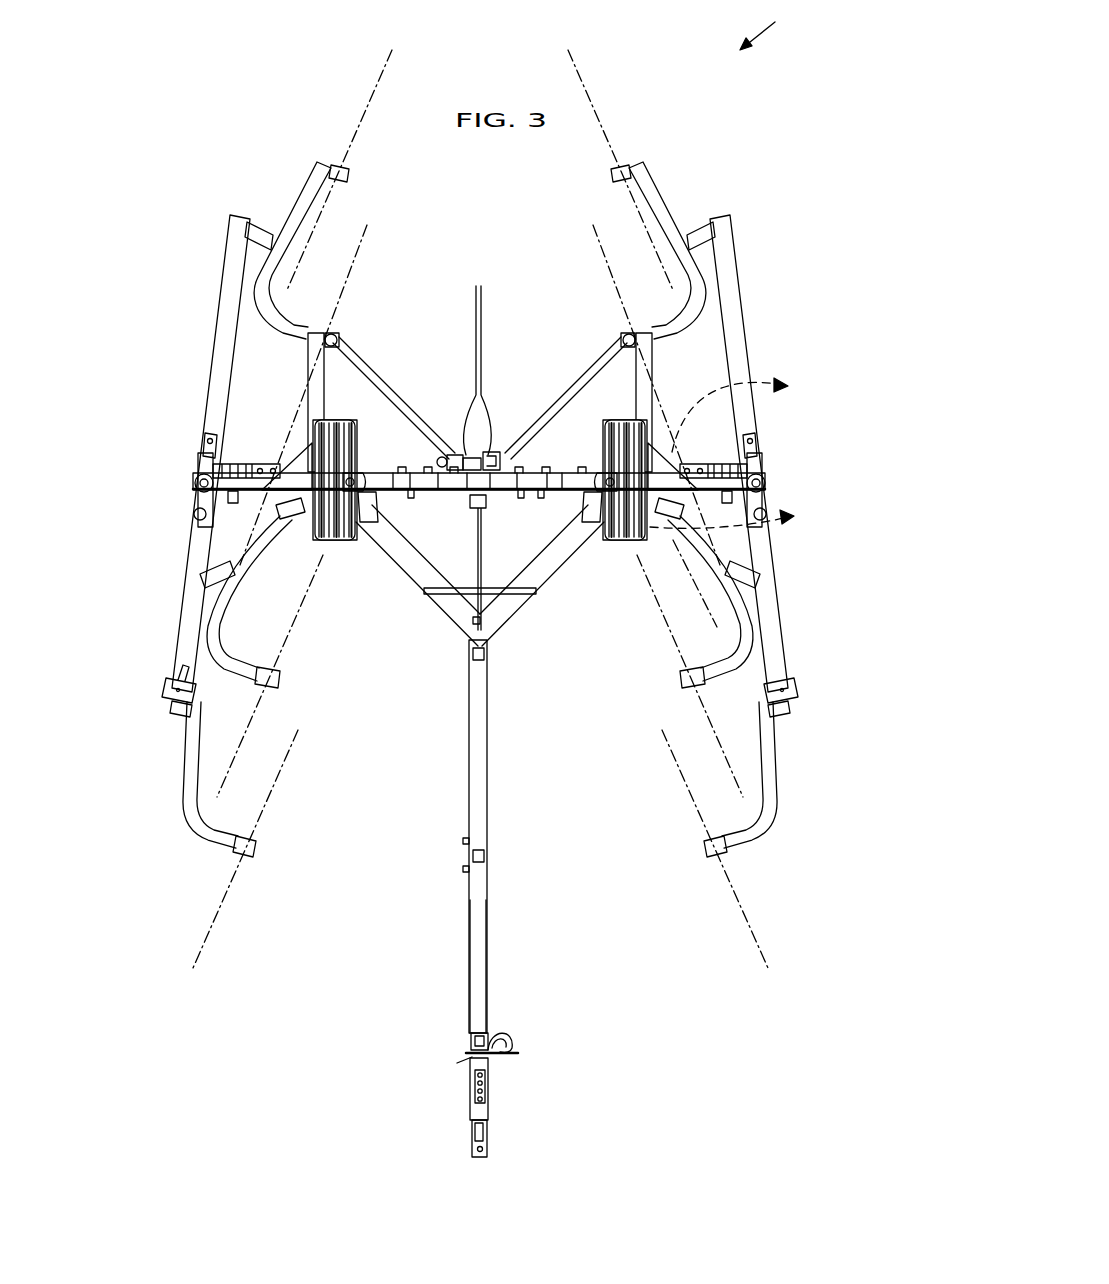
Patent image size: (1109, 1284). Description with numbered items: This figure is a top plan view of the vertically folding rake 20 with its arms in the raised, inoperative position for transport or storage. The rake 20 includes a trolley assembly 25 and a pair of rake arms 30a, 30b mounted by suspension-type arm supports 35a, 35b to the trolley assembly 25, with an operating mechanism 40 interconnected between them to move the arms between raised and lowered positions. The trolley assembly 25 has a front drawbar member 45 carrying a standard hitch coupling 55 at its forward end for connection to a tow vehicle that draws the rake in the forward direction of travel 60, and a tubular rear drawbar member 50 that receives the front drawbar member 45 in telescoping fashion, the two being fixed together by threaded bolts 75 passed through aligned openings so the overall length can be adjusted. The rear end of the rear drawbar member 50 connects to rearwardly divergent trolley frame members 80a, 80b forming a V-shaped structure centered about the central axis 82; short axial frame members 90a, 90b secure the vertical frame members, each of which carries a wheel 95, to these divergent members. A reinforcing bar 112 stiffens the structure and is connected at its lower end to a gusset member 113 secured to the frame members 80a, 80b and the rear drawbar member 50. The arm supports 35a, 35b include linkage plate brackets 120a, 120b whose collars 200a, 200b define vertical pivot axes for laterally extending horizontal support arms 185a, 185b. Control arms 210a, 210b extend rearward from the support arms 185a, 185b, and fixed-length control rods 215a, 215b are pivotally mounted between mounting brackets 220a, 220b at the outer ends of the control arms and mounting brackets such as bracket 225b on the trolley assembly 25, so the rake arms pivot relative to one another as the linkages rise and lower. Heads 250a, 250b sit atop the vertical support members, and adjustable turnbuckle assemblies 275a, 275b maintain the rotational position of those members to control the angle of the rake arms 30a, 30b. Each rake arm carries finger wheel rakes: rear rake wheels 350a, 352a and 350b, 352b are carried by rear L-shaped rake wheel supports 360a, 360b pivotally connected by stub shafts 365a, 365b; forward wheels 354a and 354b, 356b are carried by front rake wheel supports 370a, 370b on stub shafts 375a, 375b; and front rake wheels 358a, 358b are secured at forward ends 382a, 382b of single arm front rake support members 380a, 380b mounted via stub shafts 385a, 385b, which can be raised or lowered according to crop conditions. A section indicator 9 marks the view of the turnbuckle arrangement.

The vertically folding rake 20 is at (774, 30).
The trolley assembly 25 is at (432, 716).
The rake arm 30a is at (770, 596).
The rake arm 30b is at (198, 606).
The suspension-type arm support 35a is at (537, 338).
The suspension-type arm support 35b is at (410, 346).
The operating mechanism 40 is at (490, 514).
The front drawbar member 45 is at (488, 912).
The rear drawbar member 50 is at (488, 748).
The hitch coupling 55 is at (505, 1126).
The forward direction of travel 60 is at (430, 1082).
The threaded bolts 75 is at (471, 868).
The rearwardly divergent trolley frame member 80a is at (560, 566).
The rearwardly divergent trolley frame member 80b is at (418, 586).
The central axis 82 is at (480, 292).
The short axial frame member 90a is at (582, 512).
The short axial frame member 90b is at (378, 512).
The wheel 95 is at (602, 470).
The reinforcing bar 112 is at (442, 612).
The gusset member 113 is at (468, 632).
The linkage plate bracket 120a is at (560, 476).
The linkage plate bracket 120b is at (357, 472).
The horizontal support arm 185a is at (716, 496).
The horizontal support arm 185b is at (234, 505).
The collar 200a is at (606, 542).
The collar 200b is at (356, 544).
The control arm 210a is at (655, 380).
The control arm 210b is at (283, 395).
The control rod 215a is at (568, 366).
The control rod 215b is at (392, 386).
The mounting bracket 220a is at (622, 336).
The mounting bracket 220b is at (335, 336).
The mounting bracket 225b is at (460, 452).
The head 250a is at (752, 478).
The head 250b is at (192, 490).
The adjustable turnbuckle assembly 275a is at (490, 450).
The adjustable turnbuckle assembly 275b is at (233, 455).
The finger wheel rake 350a is at (578, 76).
The rake wheel 350b is at (368, 116).
The finger wheel rake 352a is at (596, 258).
The rake wheel 352b is at (372, 246).
The finger wheel rake 354a is at (655, 560).
The rake wheel 354b is at (285, 562).
The rake wheel 356b is at (282, 656).
The front rake wheel 358a is at (674, 770).
The front rake wheel 358b is at (300, 752).
The rear L-shaped rake wheel support 360a is at (655, 188).
The rear L-shaped rake wheel support 360b is at (300, 232).
The stub shaft 365a is at (730, 222).
The stub shaft 365b is at (242, 228).
The front rake wheel support 370a is at (715, 528).
The front wheel support 370b is at (216, 634).
The stub shaft 375a is at (762, 578).
The stub shaft 375b is at (202, 582).
The single arm front rake support member 380a is at (772, 752).
The single arm front rake support member 380b is at (182, 758).
The forward end 382a is at (790, 715).
The forward end 382b is at (170, 712).
The stub shaft 385a is at (792, 696).
The stub shaft 385b is at (170, 702).
The section view arrows 9 is at (729, 453).